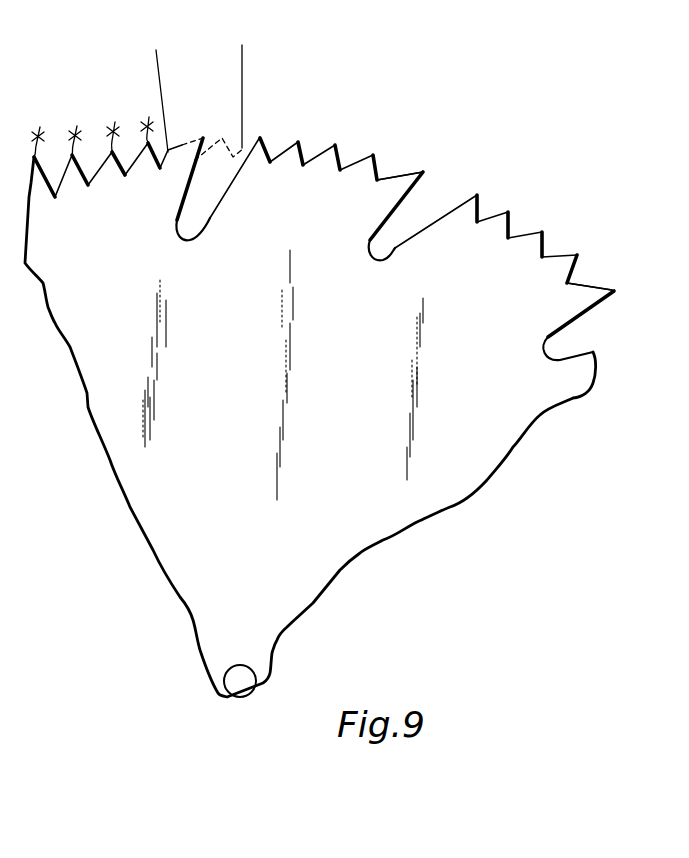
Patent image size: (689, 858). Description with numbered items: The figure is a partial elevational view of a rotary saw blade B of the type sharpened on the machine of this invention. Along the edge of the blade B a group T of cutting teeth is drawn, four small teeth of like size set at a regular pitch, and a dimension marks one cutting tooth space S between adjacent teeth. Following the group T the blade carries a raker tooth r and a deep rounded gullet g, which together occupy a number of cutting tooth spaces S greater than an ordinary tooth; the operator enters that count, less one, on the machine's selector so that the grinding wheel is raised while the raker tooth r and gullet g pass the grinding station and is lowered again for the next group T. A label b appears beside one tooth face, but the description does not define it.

The cutting tooth space S is at (242, 62).
The group of cutting teeth T is at (583, 263).
The saw blade B is at (341, 393).
The gullet g is at (407, 200).
The tooth face b is at (573, 323).
The raker tooth r is at (633, 272).